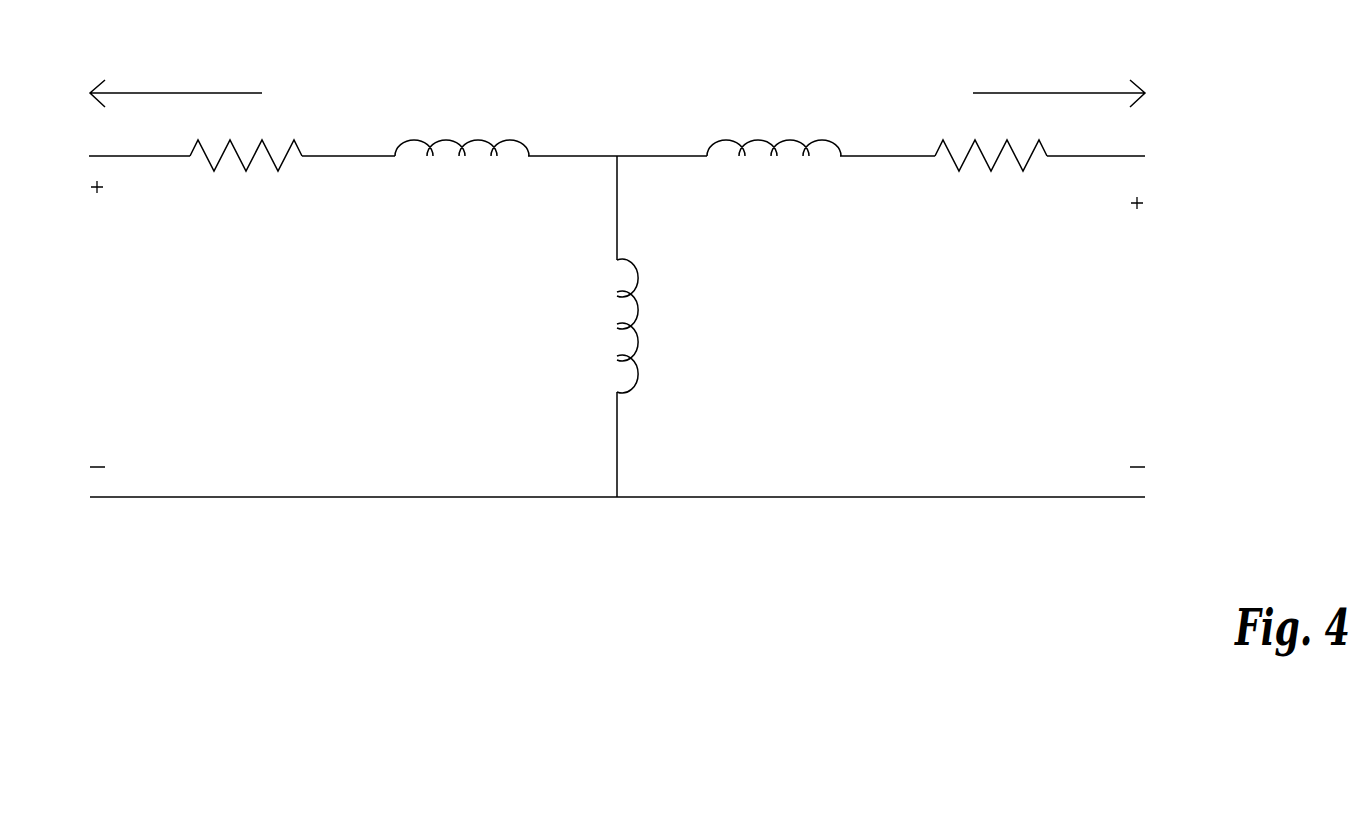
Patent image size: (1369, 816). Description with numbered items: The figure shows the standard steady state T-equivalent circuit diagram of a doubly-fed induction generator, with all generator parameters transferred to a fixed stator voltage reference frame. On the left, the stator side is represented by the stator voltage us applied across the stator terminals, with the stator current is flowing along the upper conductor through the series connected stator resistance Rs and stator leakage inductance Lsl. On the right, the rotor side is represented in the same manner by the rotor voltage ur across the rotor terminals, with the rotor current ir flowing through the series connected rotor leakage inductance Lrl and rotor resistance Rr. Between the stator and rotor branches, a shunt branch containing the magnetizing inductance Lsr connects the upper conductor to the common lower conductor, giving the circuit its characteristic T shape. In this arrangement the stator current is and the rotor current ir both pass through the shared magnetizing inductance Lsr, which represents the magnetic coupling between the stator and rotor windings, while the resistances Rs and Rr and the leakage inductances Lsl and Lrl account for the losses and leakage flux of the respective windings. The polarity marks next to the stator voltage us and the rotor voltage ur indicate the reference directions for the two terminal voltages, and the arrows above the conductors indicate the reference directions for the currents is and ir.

The stator current is is at (176, 73).
The rotor current ir is at (1059, 72).
The stator resistance Rs is at (246, 176).
The stator leakage inductance Lsl is at (462, 176).
The magnetizing inductance Lsr is at (688, 326).
The rotor leakage inductance Lrl is at (774, 176).
The rotor resistance Rr is at (991, 176).
The stator voltage us is at (97, 324).
The rotor voltage ur is at (1141, 332).